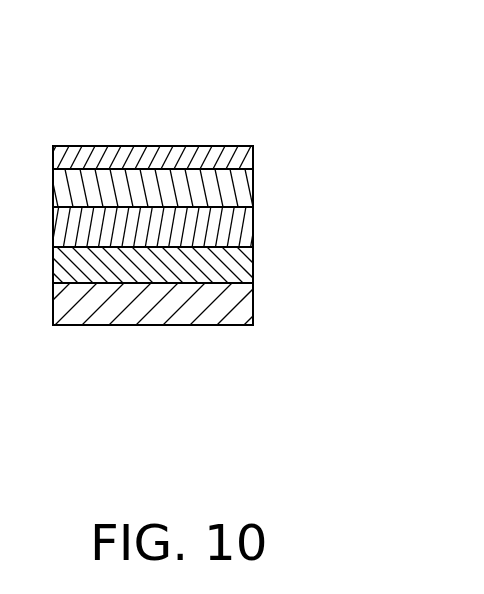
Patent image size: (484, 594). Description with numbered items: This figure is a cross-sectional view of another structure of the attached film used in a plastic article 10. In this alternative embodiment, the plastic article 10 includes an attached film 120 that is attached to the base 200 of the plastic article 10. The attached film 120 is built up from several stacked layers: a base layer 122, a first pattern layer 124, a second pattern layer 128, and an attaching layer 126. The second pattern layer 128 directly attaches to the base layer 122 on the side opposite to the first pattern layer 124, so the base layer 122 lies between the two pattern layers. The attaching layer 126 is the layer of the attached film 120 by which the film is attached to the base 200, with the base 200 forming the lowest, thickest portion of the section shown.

The plastic article 10 is at (204, 181).
The attached film 120 is at (209, 210).
The base layer 122 is at (228, 191).
The first pattern layer 124 is at (237, 231).
The attaching layer 126 is at (171, 265).
The second pattern layer 128 is at (232, 163).
The base 200 is at (275, 313).